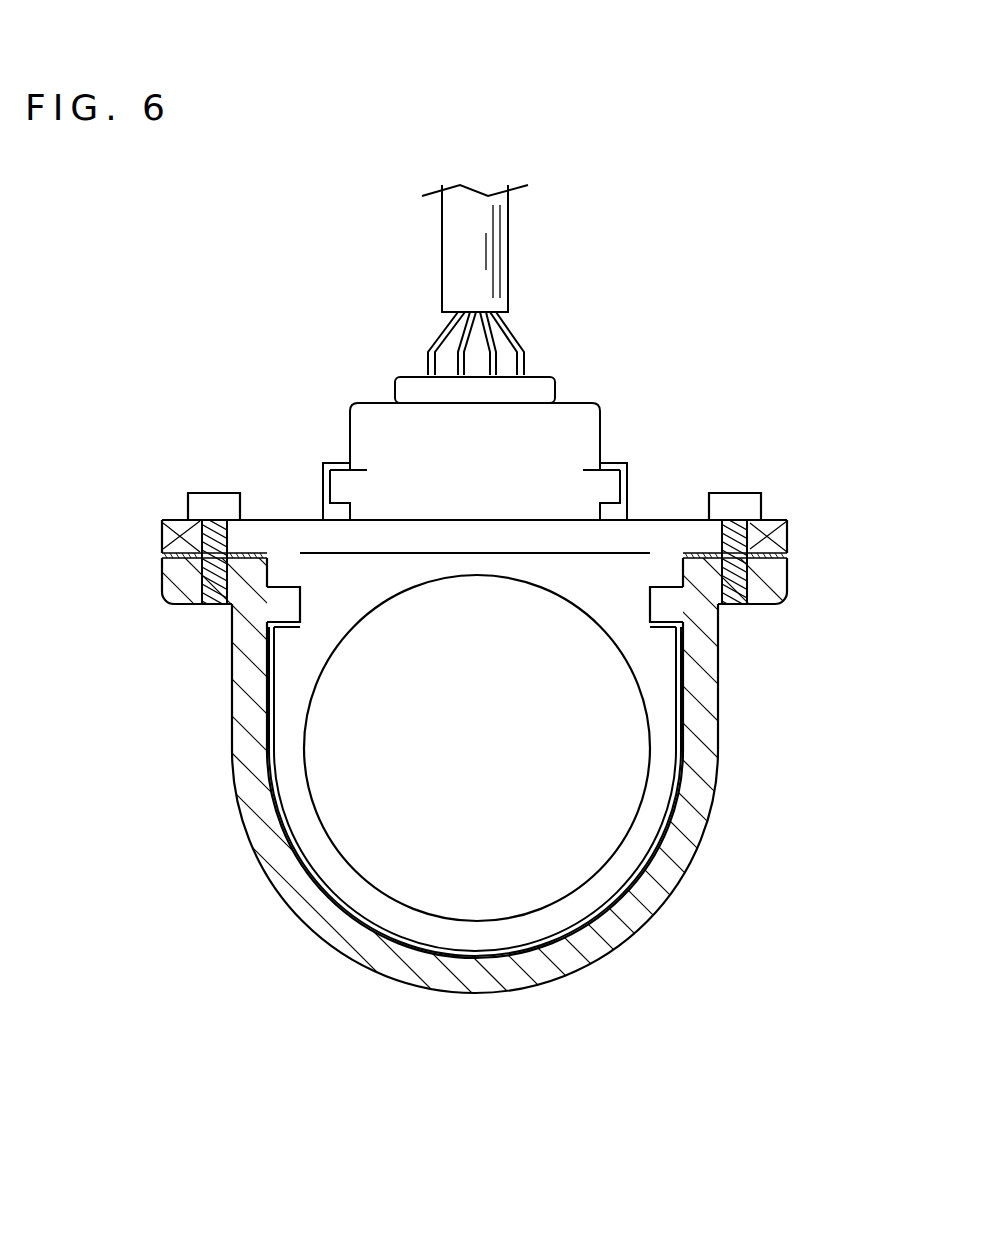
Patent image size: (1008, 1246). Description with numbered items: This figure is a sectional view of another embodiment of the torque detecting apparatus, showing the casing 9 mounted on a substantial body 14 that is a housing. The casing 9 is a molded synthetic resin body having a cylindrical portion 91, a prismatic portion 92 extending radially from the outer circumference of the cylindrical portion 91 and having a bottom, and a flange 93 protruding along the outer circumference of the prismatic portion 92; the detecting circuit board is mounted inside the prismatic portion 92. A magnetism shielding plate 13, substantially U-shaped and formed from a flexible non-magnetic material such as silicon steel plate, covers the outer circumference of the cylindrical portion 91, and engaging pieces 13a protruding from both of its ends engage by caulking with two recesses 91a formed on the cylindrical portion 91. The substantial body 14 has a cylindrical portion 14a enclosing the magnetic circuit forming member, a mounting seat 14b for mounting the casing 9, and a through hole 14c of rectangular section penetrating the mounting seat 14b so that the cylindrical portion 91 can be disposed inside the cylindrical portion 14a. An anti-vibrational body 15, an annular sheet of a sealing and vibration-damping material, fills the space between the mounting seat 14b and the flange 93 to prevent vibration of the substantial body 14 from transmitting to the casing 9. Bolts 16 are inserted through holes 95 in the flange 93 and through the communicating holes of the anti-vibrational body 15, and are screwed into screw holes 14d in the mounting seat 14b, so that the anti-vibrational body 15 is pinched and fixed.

The casing 9 is at (585, 907).
The magnetism shielding plate 13 is at (683, 690).
The engaging pieces 13a is at (300, 603).
The substantial body 14 is at (690, 886).
The cylindrical portion 14a is at (517, 982).
The mounting seat 14b is at (262, 550).
The through hole 14c is at (675, 558).
The screw holes 14d is at (197, 583).
The anti-vibrational body 15 is at (178, 541).
The bolts 16 is at (207, 497).
The cylindrical portion 91 is at (365, 900).
The recesses 91a is at (283, 628).
The prismatic portion 92 is at (380, 423).
The flange 93 is at (182, 518).
The holes 95 is at (200, 552).